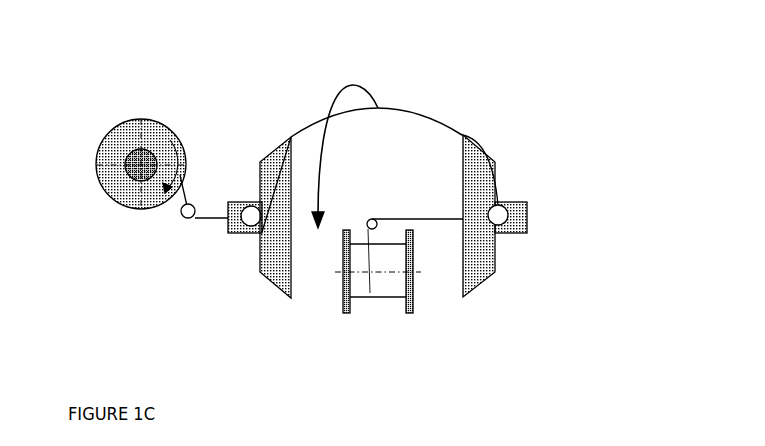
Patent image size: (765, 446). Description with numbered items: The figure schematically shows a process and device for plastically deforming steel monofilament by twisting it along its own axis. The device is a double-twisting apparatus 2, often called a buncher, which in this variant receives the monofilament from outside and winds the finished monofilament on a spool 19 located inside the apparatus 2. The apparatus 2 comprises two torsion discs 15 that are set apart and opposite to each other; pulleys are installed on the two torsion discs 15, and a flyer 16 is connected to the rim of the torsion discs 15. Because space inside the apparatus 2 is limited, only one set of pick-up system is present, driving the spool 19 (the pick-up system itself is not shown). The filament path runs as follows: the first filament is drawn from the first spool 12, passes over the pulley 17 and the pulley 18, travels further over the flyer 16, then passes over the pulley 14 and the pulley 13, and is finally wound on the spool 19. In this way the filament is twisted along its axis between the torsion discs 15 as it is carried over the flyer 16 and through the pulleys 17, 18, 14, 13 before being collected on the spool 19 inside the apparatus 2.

The double-twisting apparatus 2 is at (515, 257).
The first spool 12 is at (153, 135).
The pulley 13 is at (374, 220).
The pulley 14 is at (502, 210).
The torsion disc 15 is at (282, 272).
The flyer 16 is at (392, 107).
The pulley 17 is at (183, 214).
The pulley 18 is at (249, 221).
The spool 19 is at (387, 288).